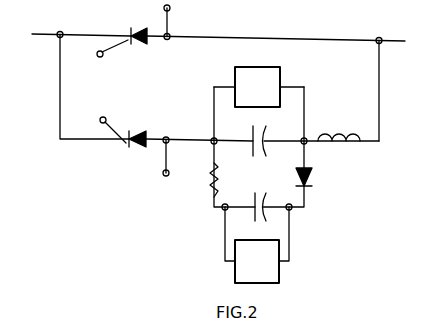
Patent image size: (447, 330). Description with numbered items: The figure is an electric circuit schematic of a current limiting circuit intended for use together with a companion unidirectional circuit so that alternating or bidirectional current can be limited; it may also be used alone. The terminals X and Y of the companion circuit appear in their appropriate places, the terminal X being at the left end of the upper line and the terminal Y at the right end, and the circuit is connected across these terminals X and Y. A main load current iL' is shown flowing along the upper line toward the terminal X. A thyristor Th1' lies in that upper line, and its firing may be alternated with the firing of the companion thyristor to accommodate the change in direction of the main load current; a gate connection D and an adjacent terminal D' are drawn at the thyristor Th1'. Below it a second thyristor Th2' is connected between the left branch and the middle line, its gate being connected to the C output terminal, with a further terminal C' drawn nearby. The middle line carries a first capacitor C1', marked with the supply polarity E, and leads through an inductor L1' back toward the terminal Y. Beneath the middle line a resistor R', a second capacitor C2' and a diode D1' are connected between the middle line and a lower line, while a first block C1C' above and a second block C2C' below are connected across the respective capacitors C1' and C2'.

The terminal X is at (60, 31).
The terminal Y is at (378, 37).
The thyristor Th1' is at (142, 48).
The thyristor Th2' is at (145, 126).
The gate terminal D is at (109, 65).
The terminal D' is at (182, 20).
The C output terminal C is at (109, 110).
The terminal C' is at (179, 160).
The load current iL' is at (284, 22).
The first capacitor control circuit C1C' is at (257, 87).
The second capacitor control circuit C2C' is at (257, 261).
The supply voltage E is at (236, 130).
The first capacitor C1' is at (277, 133).
The second capacitor C2' is at (263, 191).
The inductor L1' is at (353, 151).
The resistor R' is at (228, 180).
The diode D1' is at (325, 174).